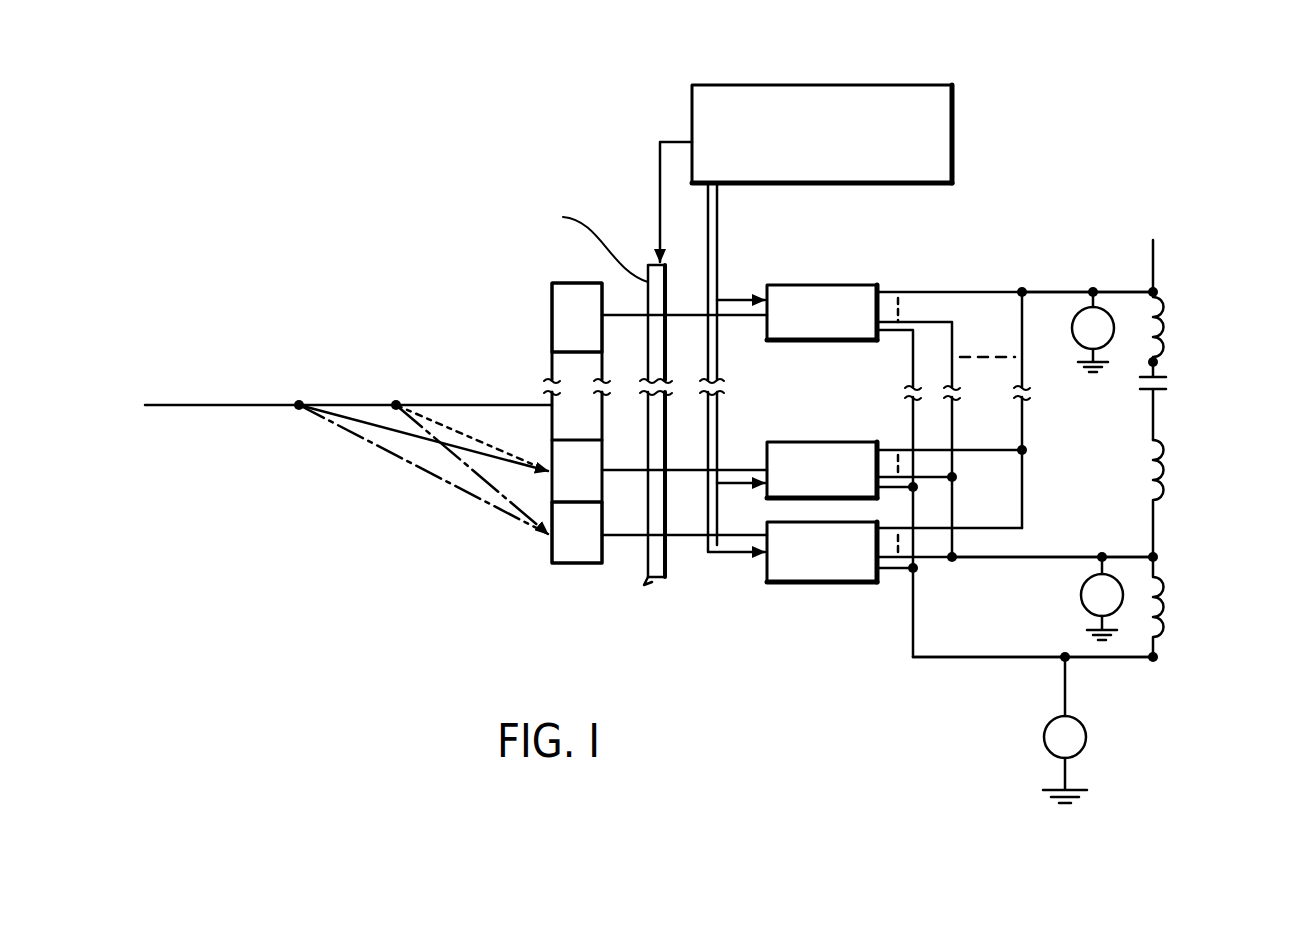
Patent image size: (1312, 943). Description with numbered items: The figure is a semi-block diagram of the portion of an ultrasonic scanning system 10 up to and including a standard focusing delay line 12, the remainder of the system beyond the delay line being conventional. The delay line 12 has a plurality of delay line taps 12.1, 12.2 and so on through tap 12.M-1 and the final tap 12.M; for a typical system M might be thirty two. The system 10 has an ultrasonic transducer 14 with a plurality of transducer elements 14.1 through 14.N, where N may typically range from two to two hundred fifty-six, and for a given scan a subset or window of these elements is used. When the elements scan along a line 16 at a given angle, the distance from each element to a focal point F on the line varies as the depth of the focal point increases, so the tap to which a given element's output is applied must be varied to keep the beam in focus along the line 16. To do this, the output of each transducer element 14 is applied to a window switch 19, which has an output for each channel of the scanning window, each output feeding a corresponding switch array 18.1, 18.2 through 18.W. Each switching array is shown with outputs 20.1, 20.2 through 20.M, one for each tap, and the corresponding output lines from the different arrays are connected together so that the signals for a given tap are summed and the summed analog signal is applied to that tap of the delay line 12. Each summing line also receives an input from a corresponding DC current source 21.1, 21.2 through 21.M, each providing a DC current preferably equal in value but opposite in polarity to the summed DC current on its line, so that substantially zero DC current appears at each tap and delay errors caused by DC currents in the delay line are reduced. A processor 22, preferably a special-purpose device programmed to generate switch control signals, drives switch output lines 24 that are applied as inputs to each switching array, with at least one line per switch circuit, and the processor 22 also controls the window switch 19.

The ultrasonic scanning system 10 is at (1047, 227).
The focusing delay line 12 is at (1184, 458).
The delay line tap 12.1 is at (1158, 660).
The delay line tap 12.2 is at (1158, 557).
The delay line tap 12.M is at (1156, 290).
The (M-1)-th ladder element 12.M-1 is at (1166, 378).
The ultrasonic transducer 14 is at (536, 266).
The transducer element 14.1 is at (550, 558).
The transducer element 14.N is at (550, 318).
The scan line 16 is at (210, 400).
The switch array 18.1 is at (808, 583).
The switch array 18.2 is at (800, 442).
The switch array 18.W is at (822, 283).
The window switch 19 is at (648, 580).
The output line 20.1 is at (1003, 660).
The output line 20.2 is at (1057, 555).
The output line 20.M is at (1093, 292).
The DC current source 21.1 is at (1087, 737).
The DC current source 21.2 is at (1080, 593).
The DC current source 21.M is at (1114, 330).
The processor 22 is at (848, 83).
The switch output lines 24 is at (718, 235).